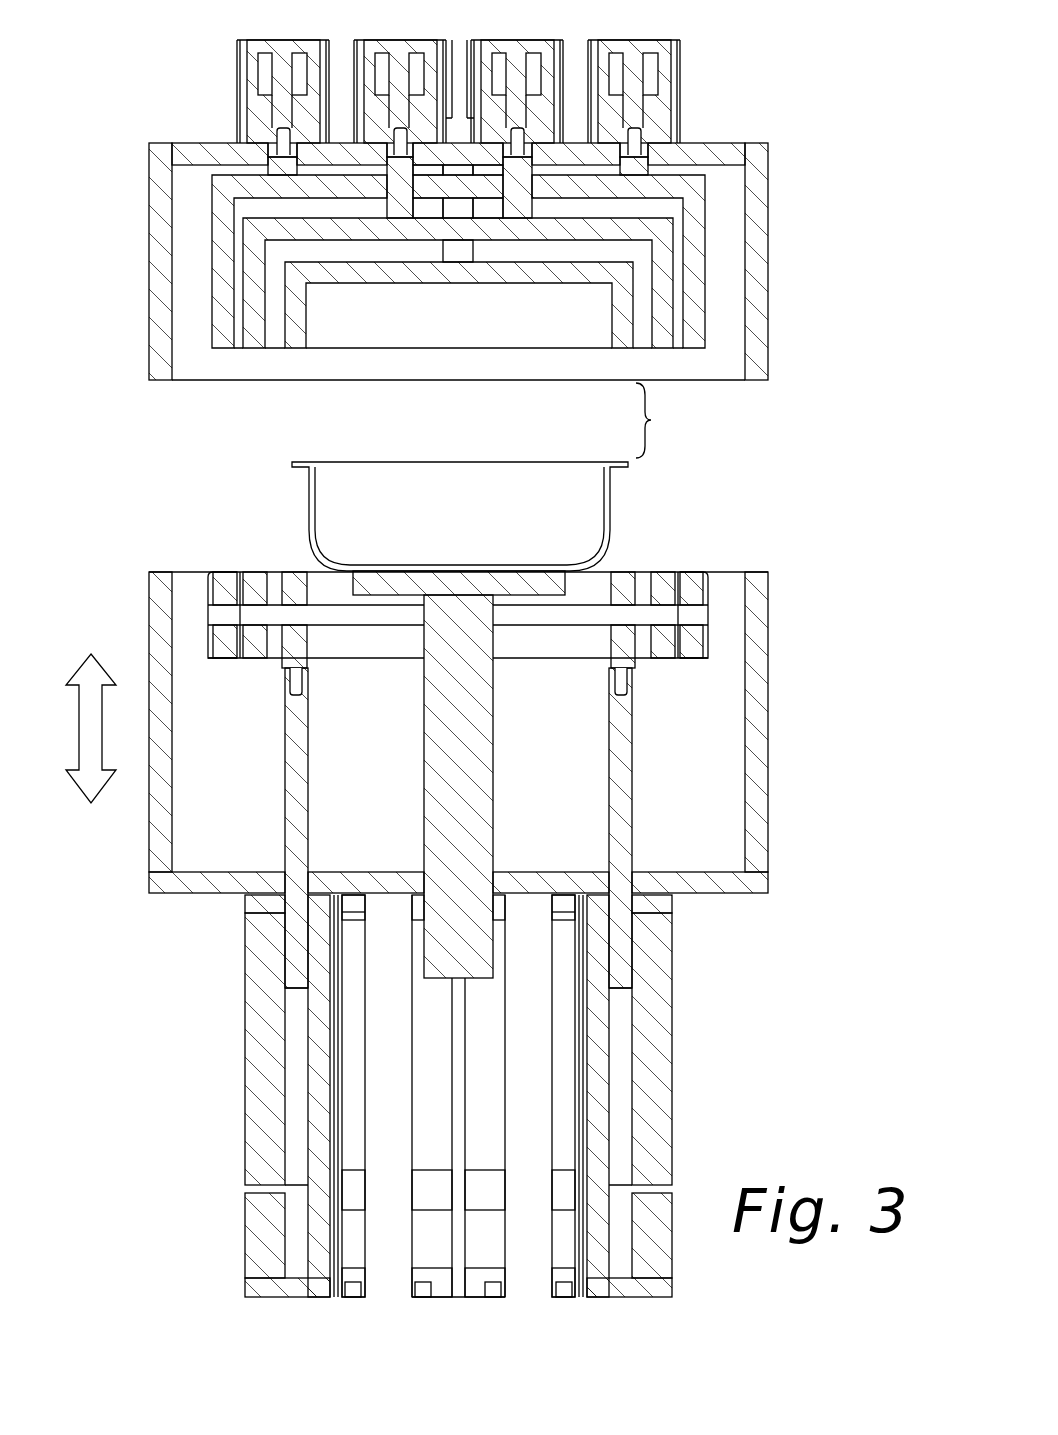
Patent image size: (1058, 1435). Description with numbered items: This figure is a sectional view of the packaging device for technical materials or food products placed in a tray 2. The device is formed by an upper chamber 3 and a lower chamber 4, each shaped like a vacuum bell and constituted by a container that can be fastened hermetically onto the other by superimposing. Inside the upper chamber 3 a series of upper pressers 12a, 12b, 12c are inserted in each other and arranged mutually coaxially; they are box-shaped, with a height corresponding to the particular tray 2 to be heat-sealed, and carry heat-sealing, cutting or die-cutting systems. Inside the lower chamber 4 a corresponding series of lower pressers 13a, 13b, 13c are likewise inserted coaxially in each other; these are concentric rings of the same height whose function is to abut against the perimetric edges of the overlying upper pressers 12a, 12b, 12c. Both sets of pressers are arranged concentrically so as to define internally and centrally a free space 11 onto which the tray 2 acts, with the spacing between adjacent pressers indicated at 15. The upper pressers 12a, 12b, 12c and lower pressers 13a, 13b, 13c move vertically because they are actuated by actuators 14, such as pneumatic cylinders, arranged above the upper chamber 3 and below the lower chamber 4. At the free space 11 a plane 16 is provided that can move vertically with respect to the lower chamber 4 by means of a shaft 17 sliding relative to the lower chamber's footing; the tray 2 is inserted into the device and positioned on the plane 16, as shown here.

The tray 2 is at (287, 487).
The upper chamber 3 is at (808, 245).
The lower chamber 4 is at (808, 688).
The free space 11 is at (463, 318).
The upper presser 12a is at (224, 234).
The upper presser 12b is at (258, 296).
The upper presser 12c is at (293, 330).
The lower presser 13a is at (700, 590).
The lower presser 13b is at (665, 584).
The lower presser 13c is at (625, 584).
The actuator 14 is at (543, 1290).
The gap between die segments 15 is at (618, 336).
The plane 16 is at (480, 590).
The shaft 17 is at (470, 722).